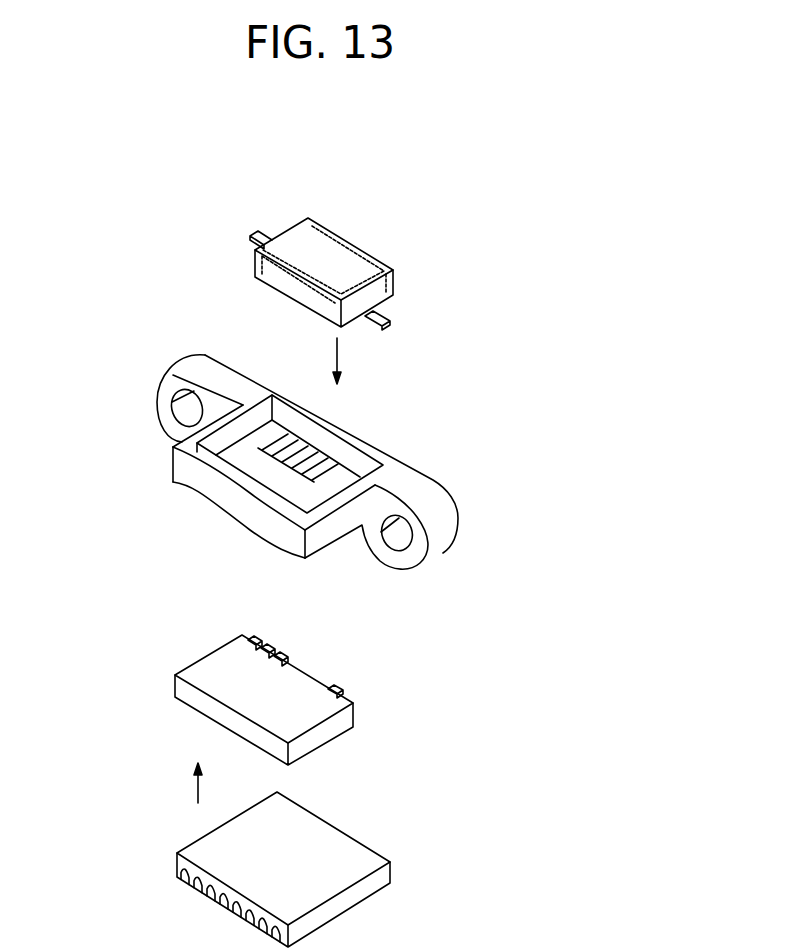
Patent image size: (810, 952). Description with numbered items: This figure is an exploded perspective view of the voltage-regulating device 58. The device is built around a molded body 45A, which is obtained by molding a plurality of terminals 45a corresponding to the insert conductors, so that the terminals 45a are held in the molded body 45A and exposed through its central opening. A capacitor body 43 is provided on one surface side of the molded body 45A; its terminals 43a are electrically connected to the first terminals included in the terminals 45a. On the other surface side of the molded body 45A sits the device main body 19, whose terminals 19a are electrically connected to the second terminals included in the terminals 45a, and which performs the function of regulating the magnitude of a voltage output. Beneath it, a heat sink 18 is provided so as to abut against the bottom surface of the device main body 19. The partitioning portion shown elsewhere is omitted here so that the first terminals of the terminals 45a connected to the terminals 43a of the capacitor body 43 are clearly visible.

The capacitor body 43 is at (335, 258).
The terminals 43a is at (395, 298).
The molded body 45A is at (330, 535).
The terminals 45a is at (255, 440).
The voltage-regulating device 58 is at (185, 592).
The device main body 19 is at (340, 741).
The terminals 19a is at (287, 648).
The heat sink 18 is at (353, 870).